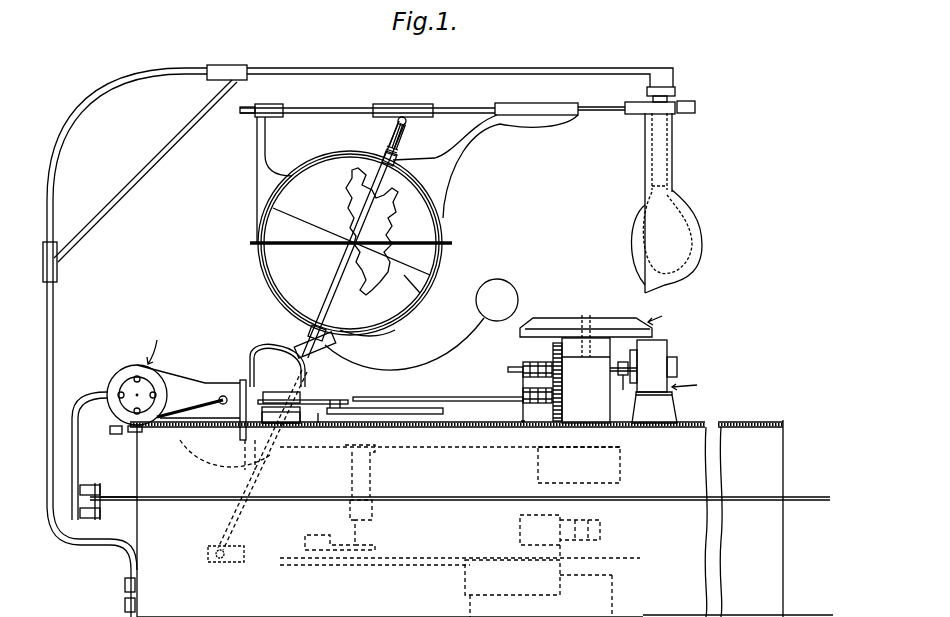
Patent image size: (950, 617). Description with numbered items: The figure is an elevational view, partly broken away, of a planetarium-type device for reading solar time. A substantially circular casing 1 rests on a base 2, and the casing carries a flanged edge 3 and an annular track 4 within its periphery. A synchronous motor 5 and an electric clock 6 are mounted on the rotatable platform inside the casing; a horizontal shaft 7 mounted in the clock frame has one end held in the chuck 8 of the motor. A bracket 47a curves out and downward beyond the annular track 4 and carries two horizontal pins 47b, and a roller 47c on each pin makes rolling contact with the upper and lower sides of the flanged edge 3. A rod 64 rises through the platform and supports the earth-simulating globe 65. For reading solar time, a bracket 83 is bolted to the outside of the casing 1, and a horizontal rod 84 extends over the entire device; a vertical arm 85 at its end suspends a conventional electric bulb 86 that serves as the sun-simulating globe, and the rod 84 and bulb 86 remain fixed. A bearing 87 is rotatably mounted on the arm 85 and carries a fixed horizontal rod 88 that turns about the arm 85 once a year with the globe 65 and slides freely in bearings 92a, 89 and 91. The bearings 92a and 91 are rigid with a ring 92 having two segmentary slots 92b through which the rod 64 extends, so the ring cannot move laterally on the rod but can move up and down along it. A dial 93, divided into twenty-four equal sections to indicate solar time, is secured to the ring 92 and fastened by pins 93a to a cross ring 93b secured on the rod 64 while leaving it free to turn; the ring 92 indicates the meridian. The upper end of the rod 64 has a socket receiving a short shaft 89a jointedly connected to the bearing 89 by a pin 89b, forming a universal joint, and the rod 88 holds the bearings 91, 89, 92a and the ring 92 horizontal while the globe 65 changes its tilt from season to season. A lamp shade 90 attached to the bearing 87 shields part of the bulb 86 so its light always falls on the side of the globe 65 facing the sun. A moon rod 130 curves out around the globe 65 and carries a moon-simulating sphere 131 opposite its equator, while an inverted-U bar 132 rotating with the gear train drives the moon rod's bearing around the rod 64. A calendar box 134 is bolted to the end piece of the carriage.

The casing 1 is at (140, 548).
The base 2 is at (185, 616).
The flanged edge 3 is at (122, 495).
The annular track 4 is at (138, 490).
The synchronous motor 5 is at (652, 355).
The electric clock 6 is at (578, 320).
The horizontal shaft 7 is at (622, 360).
The chuck 8 is at (620, 390).
The bracket 47a is at (78, 388).
The horizontal pins 47b is at (90, 486).
The roller 47c is at (100, 515).
The rod 64 is at (282, 385).
The earth-simulating globe 65 is at (430, 290).
The bracket 83 is at (95, 545).
The horizontal rod 84 is at (573, 68).
The vertical arm 85 is at (676, 91).
The electric bulb 86 is at (640, 225).
The bearing 87 is at (668, 113).
The horizontal rod 88 is at (603, 115).
The bearing 89 is at (405, 105).
The short shaft 89a is at (396, 125).
The pin 89b is at (396, 113).
The lamp shade 90 is at (702, 230).
The bearing 91 is at (270, 107).
The ring 92 is at (447, 214).
The bearing 92a is at (532, 108).
The segmentary slots 92b is at (305, 168).
The dial 93 is at (262, 243).
The pins 93a is at (350, 240).
The cross ring 93b is at (404, 150).
The moon rod 130 is at (425, 362).
The moon-simulating sphere 131 is at (505, 282).
The bar 132 is at (305, 392).
The calendar box 134 is at (195, 383).